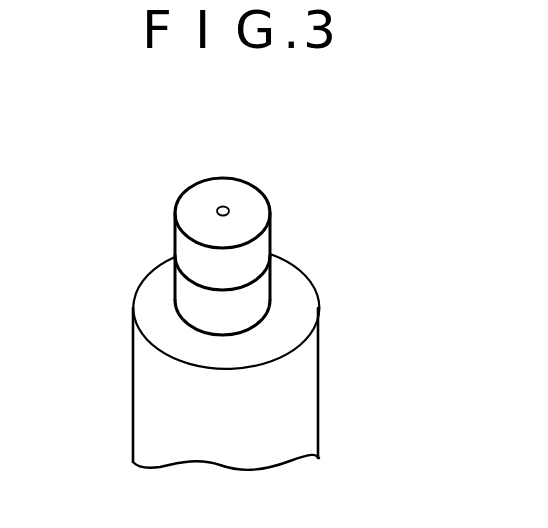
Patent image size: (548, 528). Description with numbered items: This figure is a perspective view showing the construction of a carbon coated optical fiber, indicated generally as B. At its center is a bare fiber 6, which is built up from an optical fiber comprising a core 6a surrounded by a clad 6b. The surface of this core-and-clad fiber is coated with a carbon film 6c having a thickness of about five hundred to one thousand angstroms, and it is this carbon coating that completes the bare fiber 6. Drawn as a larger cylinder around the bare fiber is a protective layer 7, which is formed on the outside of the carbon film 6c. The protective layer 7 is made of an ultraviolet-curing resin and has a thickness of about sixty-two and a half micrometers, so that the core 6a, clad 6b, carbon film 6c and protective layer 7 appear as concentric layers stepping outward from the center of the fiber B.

The connector (male side) B is at (123, 180).
The bare fiber 6 is at (405, 150).
The core 6a is at (230, 208).
The clad 6b is at (252, 242).
The carbon film 6c is at (260, 302).
The protective layer 7 is at (282, 340).